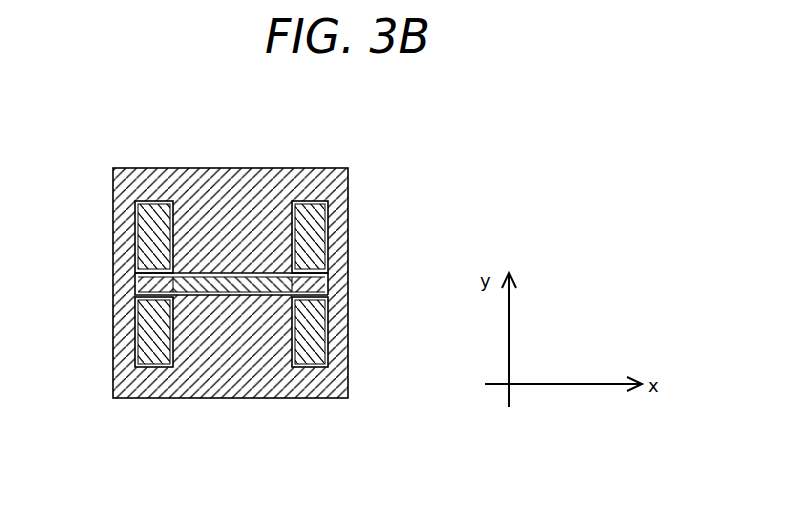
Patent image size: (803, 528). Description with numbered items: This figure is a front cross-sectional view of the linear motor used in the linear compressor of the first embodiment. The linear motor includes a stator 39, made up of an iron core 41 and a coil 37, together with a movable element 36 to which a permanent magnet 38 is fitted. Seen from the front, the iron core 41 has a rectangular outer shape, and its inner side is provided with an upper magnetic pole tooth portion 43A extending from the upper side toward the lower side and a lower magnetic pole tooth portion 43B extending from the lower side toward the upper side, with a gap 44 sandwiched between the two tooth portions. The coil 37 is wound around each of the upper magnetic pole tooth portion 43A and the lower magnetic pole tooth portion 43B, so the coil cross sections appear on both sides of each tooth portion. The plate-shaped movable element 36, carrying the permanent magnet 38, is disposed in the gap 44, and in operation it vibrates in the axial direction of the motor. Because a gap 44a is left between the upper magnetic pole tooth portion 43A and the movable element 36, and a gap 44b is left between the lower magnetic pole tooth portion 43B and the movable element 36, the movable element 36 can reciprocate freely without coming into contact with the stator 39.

The movable element 36 is at (163, 300).
The coil 37 is at (279, 285).
The permanent magnet 38 is at (226, 288).
The stator 39 is at (296, 262).
The iron core 41 is at (312, 187).
The upper magnetic pole tooth portion 43A is at (235, 215).
The lower magnetic pole tooth portion 43B is at (276, 360).
The gap 44 is at (162, 258).
The gap 44a is at (298, 267).
The gap 44b is at (291, 300).